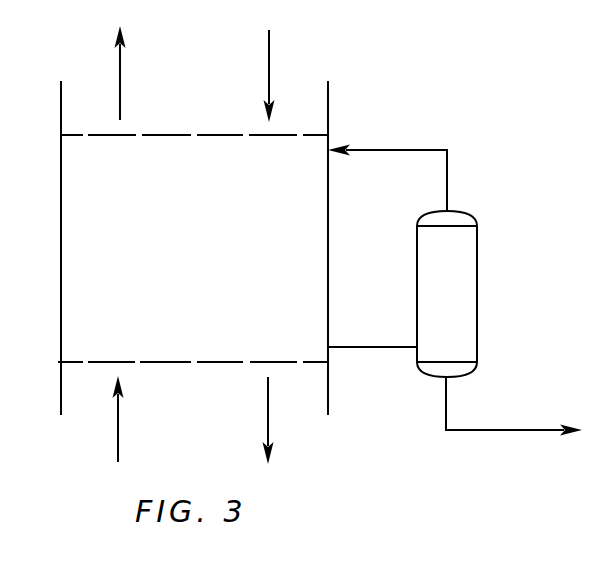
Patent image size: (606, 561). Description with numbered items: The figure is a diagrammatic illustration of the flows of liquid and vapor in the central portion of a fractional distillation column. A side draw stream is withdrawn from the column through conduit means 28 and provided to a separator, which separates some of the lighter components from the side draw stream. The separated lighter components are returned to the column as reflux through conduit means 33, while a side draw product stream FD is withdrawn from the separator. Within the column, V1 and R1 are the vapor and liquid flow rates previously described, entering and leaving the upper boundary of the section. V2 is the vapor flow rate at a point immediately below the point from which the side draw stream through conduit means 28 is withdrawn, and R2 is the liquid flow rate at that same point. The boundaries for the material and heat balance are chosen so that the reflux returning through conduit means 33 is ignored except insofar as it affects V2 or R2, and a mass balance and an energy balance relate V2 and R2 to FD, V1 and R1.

The conduit means 28 is at (370, 347).
The conduit means 33 is at (392, 150).
The vapor flow rate V1 is at (133, 73).
The liquid flow rate R1 is at (281, 74).
The vapor flow rate V2 is at (102, 425).
The liquid flow rate R2 is at (282, 424).
The side draw product stream flow rate FD is at (514, 406).